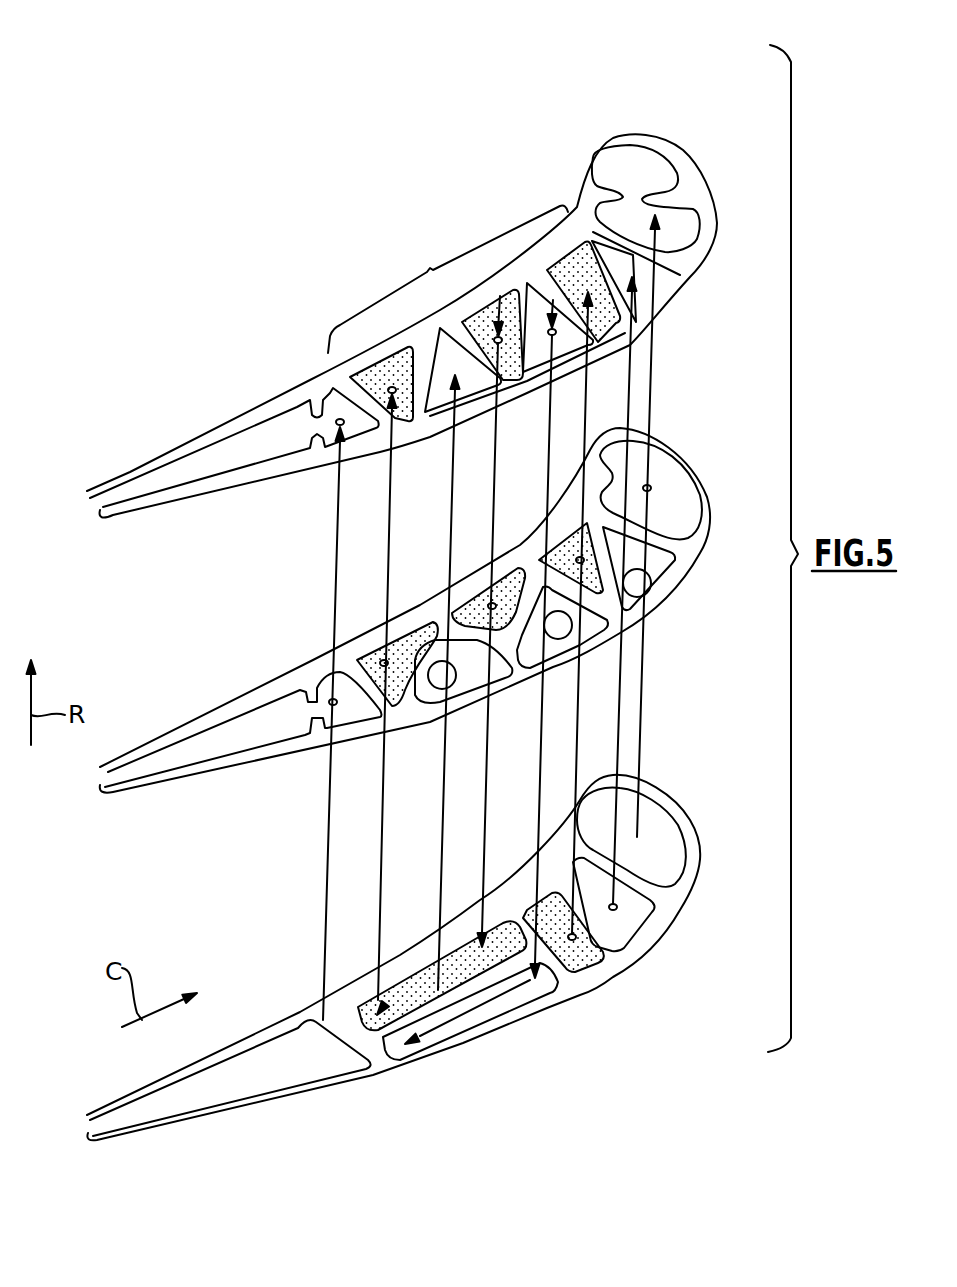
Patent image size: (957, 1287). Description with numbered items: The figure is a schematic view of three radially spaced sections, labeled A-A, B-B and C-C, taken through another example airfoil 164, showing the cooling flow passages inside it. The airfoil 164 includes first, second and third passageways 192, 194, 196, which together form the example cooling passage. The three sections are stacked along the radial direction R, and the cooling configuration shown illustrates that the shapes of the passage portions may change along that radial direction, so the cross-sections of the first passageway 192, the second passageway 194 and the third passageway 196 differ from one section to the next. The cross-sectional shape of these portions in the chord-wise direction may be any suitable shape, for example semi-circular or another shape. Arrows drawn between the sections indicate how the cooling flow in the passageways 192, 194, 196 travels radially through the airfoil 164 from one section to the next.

The airfoil 164 is at (407, 586).
The first passageway 192 is at (652, 170).
The second passageway 194 is at (427, 268).
The third passageway 196 is at (290, 440).